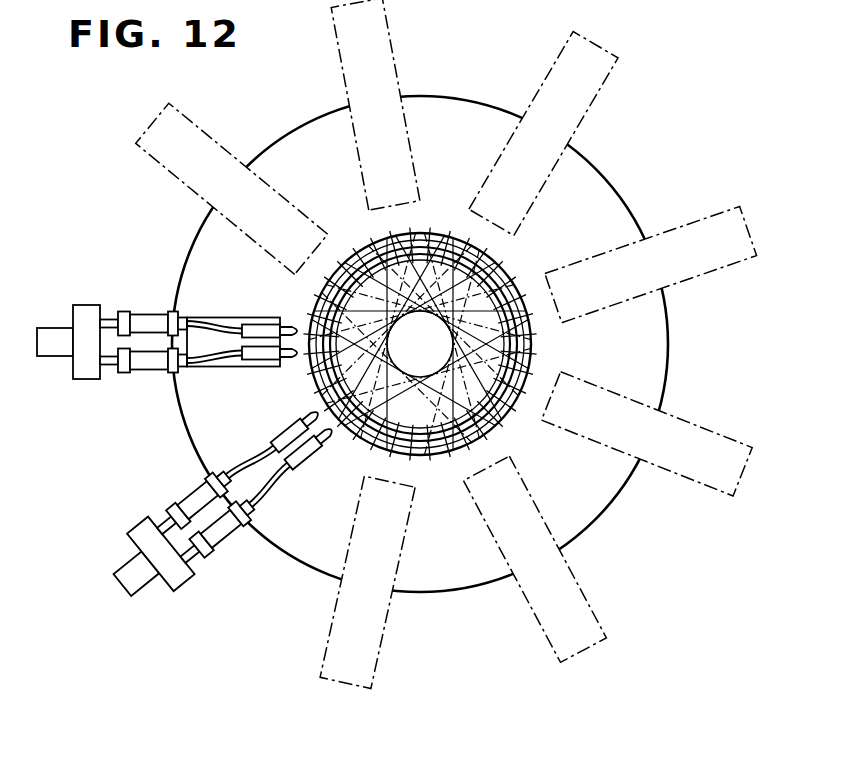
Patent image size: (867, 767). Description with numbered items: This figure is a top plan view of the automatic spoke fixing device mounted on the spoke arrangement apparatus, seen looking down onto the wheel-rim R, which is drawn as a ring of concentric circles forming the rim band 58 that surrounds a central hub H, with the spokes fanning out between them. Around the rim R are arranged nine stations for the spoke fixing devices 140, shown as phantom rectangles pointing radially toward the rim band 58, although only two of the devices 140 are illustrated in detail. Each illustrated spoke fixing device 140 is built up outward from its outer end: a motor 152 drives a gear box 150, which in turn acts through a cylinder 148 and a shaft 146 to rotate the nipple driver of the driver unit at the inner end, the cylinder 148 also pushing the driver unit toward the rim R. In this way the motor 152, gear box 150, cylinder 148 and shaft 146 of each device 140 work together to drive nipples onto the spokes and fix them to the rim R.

The spoke fixing device 140 is at (387, 344).
The rim ring 58 is at (523, 348).
The rim R is at (500, 421).
The hub H is at (420, 344).
The shaft 146 is at (227, 335).
The cylinder 148 is at (148, 328).
The gear box 150 is at (85, 368).
The motor 152 is at (53, 345).